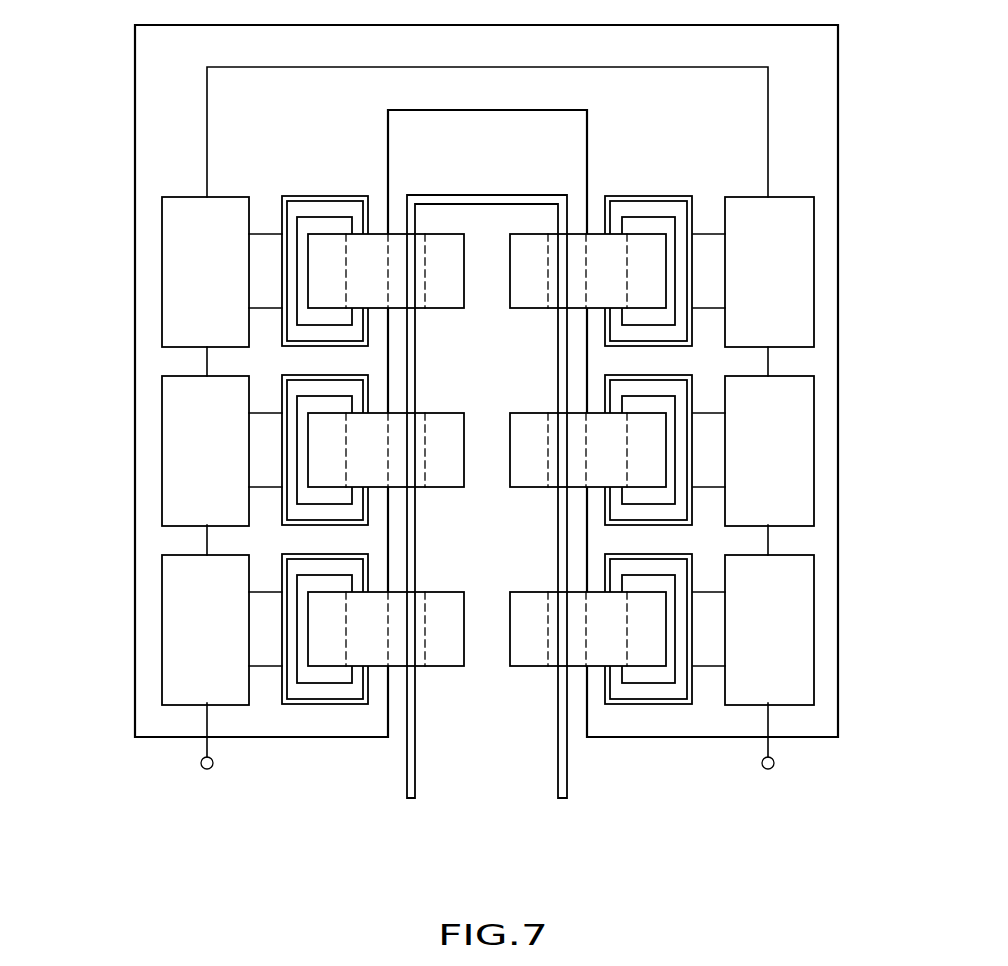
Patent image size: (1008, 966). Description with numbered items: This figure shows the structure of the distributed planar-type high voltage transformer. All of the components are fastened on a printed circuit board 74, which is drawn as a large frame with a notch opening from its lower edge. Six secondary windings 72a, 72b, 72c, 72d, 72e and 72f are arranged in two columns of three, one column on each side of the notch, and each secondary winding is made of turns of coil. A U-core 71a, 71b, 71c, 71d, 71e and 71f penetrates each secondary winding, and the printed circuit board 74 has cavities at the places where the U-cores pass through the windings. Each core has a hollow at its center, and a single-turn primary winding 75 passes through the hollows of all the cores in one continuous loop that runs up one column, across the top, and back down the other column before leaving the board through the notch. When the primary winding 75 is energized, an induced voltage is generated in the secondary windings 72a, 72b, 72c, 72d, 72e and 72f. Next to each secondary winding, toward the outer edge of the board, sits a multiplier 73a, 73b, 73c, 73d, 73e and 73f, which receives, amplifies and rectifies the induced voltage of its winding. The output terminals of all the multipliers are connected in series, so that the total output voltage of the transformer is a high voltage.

The printed circuit board 74 is at (135, 110).
The primary winding 75 is at (408, 802).
The U-core 71a is at (530, 667).
The U-core 71b is at (588, 450).
The U-core 71c is at (527, 233).
The U-core 71d is at (440, 233).
The U-core 71e is at (440, 413).
The U-core 71f is at (445, 667).
The secondary winding 72a is at (613, 703).
The secondary winding 72b is at (527, 413).
The secondary winding 72c is at (638, 196).
The secondary winding 72d is at (315, 195).
The secondary winding 72e is at (370, 505).
The secondary winding 72f is at (346, 705).
The multiplier 73a is at (785, 632).
The multiplier 73b is at (785, 452).
The multiplier 73c is at (787, 273).
The multiplier 73d is at (172, 276).
The multiplier 73e is at (172, 453).
The multiplier 73f is at (172, 632).